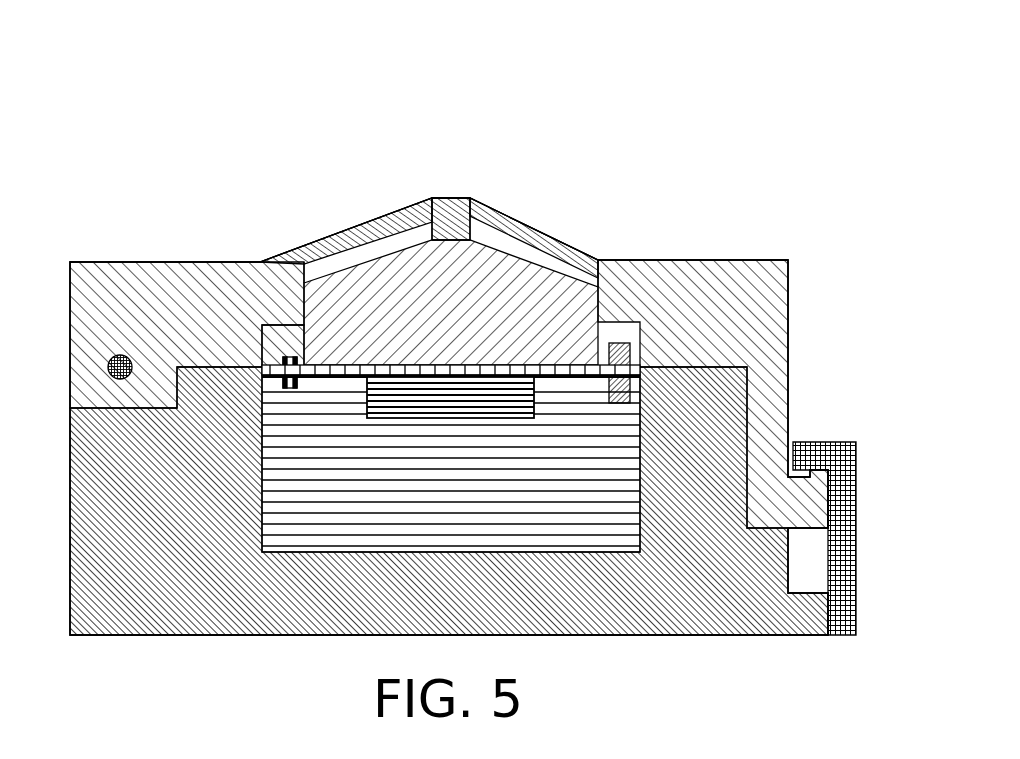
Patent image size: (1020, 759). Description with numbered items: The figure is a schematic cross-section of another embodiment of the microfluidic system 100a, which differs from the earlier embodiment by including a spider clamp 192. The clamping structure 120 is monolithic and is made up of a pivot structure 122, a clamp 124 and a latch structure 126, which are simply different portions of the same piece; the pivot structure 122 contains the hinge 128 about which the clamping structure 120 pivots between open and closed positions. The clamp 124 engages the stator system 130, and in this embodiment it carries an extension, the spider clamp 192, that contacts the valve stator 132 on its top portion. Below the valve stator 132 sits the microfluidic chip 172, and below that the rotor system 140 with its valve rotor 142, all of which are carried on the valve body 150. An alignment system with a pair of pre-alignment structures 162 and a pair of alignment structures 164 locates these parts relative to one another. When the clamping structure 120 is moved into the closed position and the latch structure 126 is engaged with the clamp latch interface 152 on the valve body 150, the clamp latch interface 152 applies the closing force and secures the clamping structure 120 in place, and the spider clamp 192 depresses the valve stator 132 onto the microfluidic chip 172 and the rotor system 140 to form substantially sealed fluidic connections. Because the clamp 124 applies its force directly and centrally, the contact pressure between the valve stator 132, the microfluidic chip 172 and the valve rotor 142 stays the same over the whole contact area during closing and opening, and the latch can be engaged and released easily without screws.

The microfluidic system 100a is at (147, 76).
The clamping structure 120 is at (256, 162).
The pivot structure 122 is at (110, 262).
The clamp 124 is at (256, 261).
The latch structure 126 is at (789, 425).
The hinge 128 is at (115, 356).
The stator system 130 is at (376, 250).
The valve stator 132 is at (476, 318).
The rotor system 140 is at (597, 523).
The valve rotor 142 is at (468, 423).
The valve body 150 is at (729, 588).
The clamp latch interface 152 is at (857, 515).
The pre-alignment structure 162 is at (621, 339).
The alignment structure 164 is at (287, 345).
The microfluidic chip 172 is at (574, 362).
The spider clamp 192 is at (451, 196).